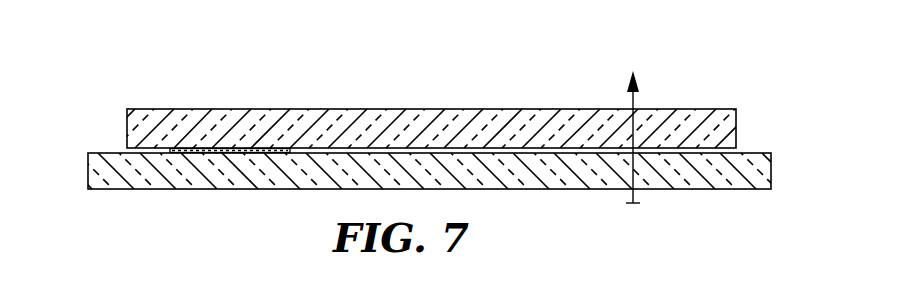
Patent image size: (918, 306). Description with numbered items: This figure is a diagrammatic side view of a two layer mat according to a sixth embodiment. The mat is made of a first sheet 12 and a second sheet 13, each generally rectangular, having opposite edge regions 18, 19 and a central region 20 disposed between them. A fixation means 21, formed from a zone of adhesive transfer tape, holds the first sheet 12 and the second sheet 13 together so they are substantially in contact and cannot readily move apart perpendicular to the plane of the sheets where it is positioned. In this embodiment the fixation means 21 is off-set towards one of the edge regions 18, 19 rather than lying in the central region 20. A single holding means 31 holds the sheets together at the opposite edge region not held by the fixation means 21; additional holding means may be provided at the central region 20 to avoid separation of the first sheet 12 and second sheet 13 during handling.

The first sheet 12 is at (452, 118).
The second sheet 13 is at (552, 176).
The edge region 18 is at (80, 103).
The edge region 19 is at (778, 104).
The central region 20 is at (458, 40).
The fixation means 21 is at (243, 150).
The holding means 31 is at (632, 138).